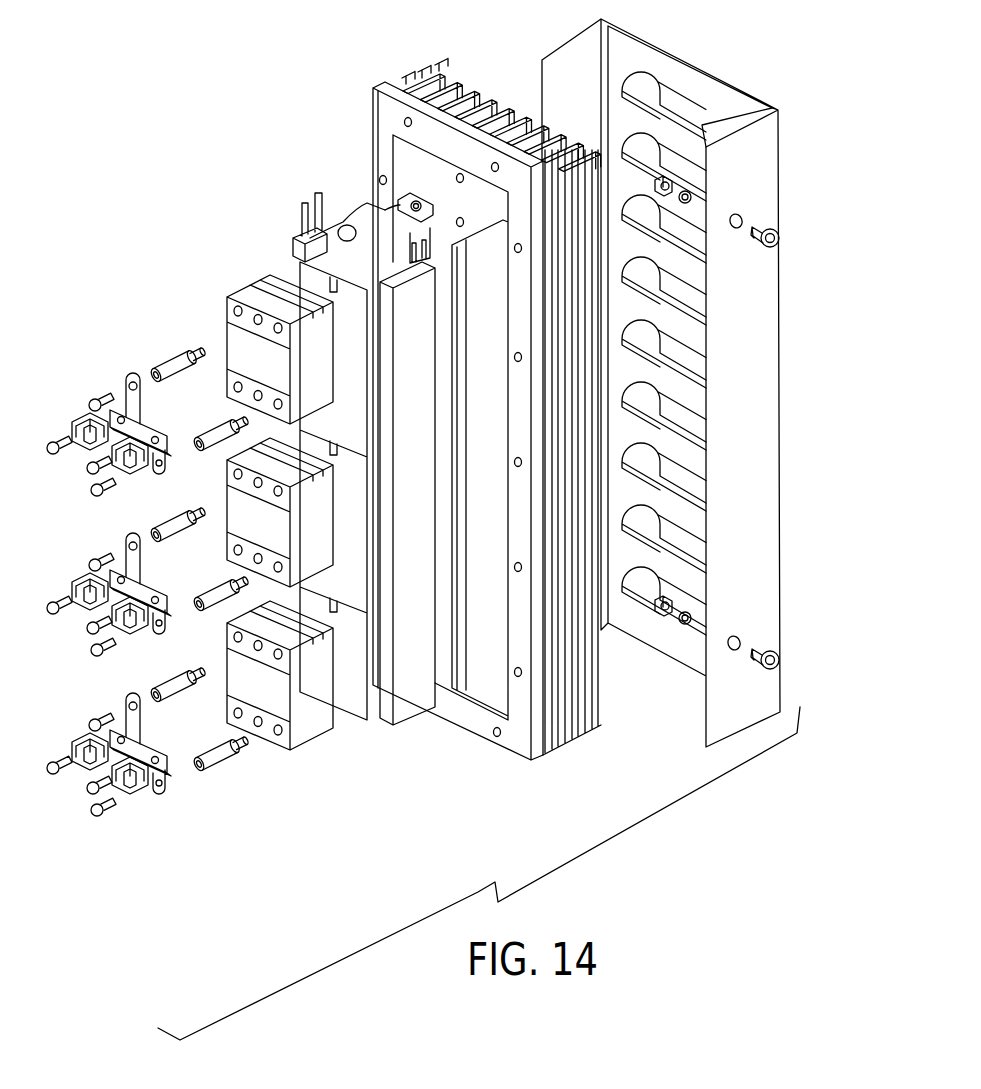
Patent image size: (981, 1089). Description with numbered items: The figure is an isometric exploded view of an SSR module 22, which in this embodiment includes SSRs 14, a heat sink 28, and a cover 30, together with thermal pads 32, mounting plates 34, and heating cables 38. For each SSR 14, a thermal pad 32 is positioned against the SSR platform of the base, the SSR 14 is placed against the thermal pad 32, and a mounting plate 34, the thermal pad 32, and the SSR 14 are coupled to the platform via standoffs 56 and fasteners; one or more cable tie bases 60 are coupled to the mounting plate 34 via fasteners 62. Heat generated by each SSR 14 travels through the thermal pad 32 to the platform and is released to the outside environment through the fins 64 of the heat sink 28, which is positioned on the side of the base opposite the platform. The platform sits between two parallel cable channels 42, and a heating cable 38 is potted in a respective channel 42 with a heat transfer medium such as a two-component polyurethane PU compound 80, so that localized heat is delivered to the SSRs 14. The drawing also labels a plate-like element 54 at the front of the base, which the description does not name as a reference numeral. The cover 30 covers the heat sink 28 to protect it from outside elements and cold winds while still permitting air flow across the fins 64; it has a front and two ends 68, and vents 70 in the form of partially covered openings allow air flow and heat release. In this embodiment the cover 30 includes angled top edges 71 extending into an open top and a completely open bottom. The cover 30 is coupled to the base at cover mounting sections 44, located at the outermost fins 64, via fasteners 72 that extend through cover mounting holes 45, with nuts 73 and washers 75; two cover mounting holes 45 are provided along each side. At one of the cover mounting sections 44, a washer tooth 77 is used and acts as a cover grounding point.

The SSR 14 is at (302, 737).
The SSR module 22 is at (423, 421).
The heat sink 28 is at (433, 62).
The cover 30 is at (693, 383).
The thermal pad 32 is at (352, 710).
The mounting plate 34 is at (128, 548).
The heating cable 38 is at (297, 237).
The cable channel 42 is at (372, 198).
The cover mounting section 44 is at (575, 740).
The cover mounting hole 45 is at (740, 220).
The frame plate 54 is at (385, 113).
The standoff 56 is at (217, 762).
The cable tie base 60 is at (80, 580).
The fastener 62 is at (90, 652).
The fin 64 is at (490, 88).
The end 68 is at (692, 383).
The vent 70 is at (695, 553).
The angled top edge 71 is at (737, 113).
The fastener 72 is at (779, 666).
The nut 73 is at (672, 178).
The washer 75 is at (680, 628).
The washer tooth 77 is at (707, 202).
The PU compound 80 is at (407, 710).